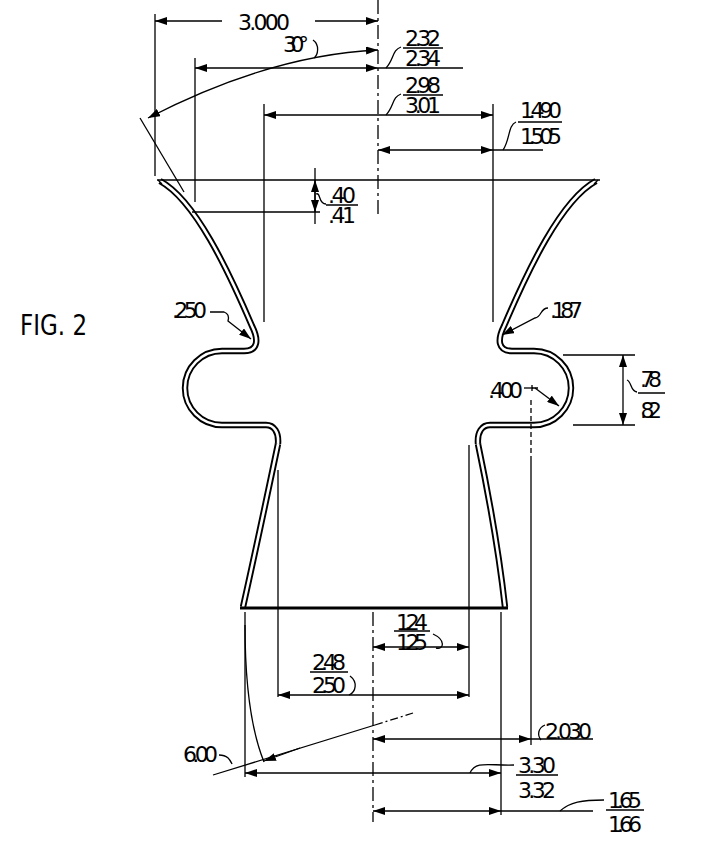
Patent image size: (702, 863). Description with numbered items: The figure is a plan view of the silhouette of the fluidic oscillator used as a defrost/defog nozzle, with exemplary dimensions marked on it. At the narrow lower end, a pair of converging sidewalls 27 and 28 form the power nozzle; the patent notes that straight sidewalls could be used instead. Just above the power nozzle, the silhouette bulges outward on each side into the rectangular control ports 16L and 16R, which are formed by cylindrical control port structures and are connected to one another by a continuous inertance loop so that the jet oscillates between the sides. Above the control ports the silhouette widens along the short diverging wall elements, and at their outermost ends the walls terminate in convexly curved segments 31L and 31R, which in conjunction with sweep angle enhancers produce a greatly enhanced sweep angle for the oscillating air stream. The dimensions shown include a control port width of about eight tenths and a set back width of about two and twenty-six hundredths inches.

The convexly curved segment 31L is at (174, 196).
The convexly curved segment 31R is at (588, 193).
The control port 16L is at (200, 381).
The control port 16R is at (533, 365).
The converging sidewall 27 is at (503, 562).
The converging sidewall 28 is at (248, 560).